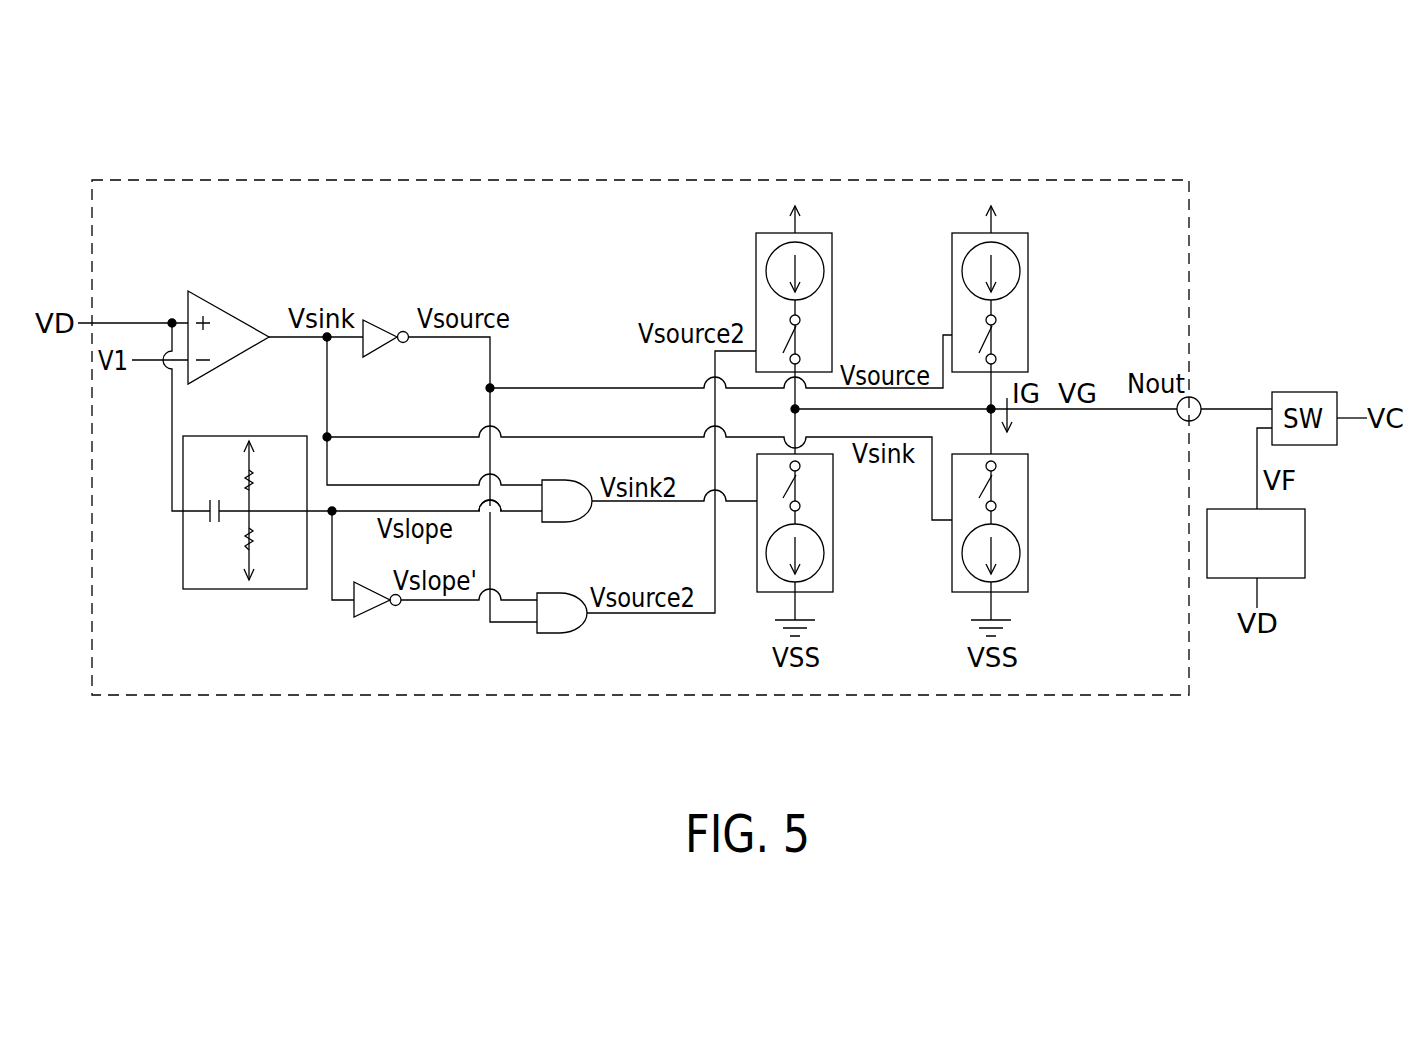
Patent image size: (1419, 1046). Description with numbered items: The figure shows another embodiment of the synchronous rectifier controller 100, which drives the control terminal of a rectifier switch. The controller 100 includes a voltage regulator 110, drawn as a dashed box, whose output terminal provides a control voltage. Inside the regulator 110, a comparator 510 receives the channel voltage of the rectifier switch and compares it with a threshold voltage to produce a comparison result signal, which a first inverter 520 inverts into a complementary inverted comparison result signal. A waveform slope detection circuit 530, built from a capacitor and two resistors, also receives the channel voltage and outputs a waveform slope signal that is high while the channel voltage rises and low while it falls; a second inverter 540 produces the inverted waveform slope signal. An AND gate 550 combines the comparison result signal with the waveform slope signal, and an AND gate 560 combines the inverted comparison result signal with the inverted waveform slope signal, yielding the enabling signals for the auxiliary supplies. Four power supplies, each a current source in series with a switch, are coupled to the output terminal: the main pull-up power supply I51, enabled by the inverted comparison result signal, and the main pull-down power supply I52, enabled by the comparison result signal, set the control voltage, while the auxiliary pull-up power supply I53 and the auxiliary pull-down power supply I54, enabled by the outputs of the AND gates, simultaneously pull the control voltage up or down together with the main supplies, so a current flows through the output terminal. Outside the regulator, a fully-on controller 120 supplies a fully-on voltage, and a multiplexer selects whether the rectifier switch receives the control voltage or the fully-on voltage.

The synchronous rectifier controller 100 is at (1264, 144).
The voltage regulator 110 is at (678, 180).
The fully-on controller 120 is at (1279, 561).
The comparator 510 is at (225, 363).
The first inverter 520 is at (386, 341).
The waveform slope detection circuit 530 is at (225, 590).
The second inverter 540 is at (376, 605).
The AND gate 550 is at (585, 522).
The AND gate 560 is at (565, 633).
The main pull-up power supply I51 is at (1020, 233).
The main pull-down power supply I52 is at (1028, 565).
The auxiliary pull-up power supply I53 is at (823, 233).
The auxiliary pull-down power supply I54 is at (833, 565).